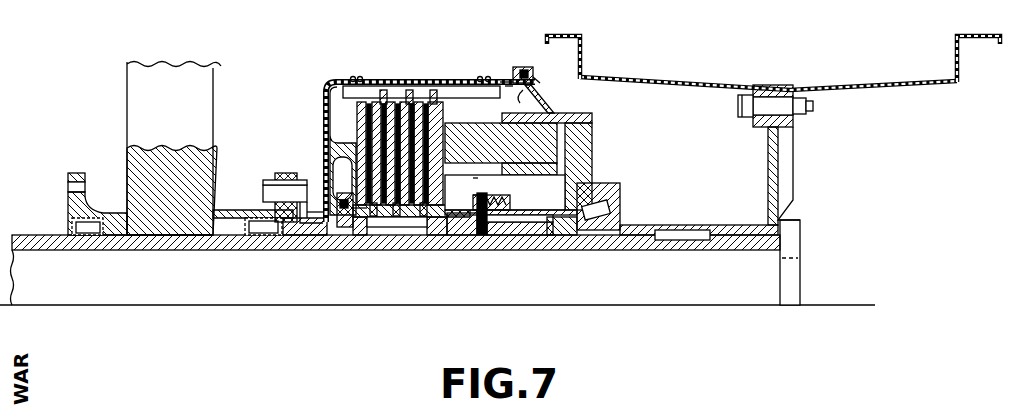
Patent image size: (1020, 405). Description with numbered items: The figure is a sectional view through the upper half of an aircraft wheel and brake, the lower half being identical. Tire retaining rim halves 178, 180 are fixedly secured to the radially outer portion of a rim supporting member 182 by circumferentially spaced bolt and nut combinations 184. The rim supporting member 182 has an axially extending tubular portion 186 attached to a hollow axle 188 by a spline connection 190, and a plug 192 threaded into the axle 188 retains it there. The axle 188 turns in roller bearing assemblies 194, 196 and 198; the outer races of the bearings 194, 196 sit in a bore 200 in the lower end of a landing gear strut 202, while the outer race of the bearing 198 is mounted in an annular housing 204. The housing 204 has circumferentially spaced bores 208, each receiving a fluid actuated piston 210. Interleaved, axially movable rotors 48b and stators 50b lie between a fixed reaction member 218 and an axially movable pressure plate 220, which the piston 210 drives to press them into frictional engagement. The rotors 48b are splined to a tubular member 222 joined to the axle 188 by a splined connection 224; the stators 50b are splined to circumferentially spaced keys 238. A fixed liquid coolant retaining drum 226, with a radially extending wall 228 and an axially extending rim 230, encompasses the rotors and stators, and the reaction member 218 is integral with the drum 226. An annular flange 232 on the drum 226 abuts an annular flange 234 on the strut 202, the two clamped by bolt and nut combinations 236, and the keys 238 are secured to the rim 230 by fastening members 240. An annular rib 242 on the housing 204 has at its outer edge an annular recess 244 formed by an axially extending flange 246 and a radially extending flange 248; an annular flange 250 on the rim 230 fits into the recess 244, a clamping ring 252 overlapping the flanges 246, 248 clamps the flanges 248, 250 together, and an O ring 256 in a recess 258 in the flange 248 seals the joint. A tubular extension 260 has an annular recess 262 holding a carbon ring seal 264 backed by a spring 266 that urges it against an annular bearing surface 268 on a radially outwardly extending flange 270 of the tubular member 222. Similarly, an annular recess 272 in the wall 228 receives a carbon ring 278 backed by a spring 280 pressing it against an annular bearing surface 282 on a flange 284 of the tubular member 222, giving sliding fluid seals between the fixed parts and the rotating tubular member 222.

The tire retaining rim half 178 is at (585, 33).
The tire retaining rim half 180 is at (963, 38).
The rim supporting member 182 is at (783, 163).
The bolt and nut combinations 184 is at (813, 108).
The axially extending tubular portion 186 is at (723, 227).
The hollow axle 188 is at (705, 293).
The spline connection 190 is at (705, 243).
The plug 192 is at (788, 280).
The roller bearing assembly 194 is at (88, 240).
The roller bearing assembly 196 is at (262, 230).
The roller bearing assembly 198 is at (620, 210).
The bore 200 is at (122, 205).
The landing gear strut 202 is at (140, 108).
The annular housing 204 is at (583, 142).
The bores 208 is at (590, 173).
The fluid actuated piston 210 is at (592, 122).
The fixed reaction member 218 is at (333, 128).
The axially movable pressure plate 220 is at (447, 100).
The tubular member 222 is at (530, 233).
The splined connection 224 is at (455, 230).
The liquid coolant retaining drum 226 is at (324, 80).
The radially extending wall 228 is at (322, 93).
The axially extending rim 230 is at (383, 93).
The annular flange 232 is at (293, 173).
The annular flange 234 is at (273, 177).
The bolt and nut combinations 236 is at (263, 190).
The keys 238 is at (417, 88).
The fastening members 240 is at (357, 78).
The annular rib 242 is at (540, 105).
The annular recess 244 is at (548, 60).
The axially extending flange 246 is at (510, 92).
The radially extending flange 248 is at (547, 73).
The annular flange 250 is at (515, 66).
The clamping ring 252 is at (523, 67).
The O ring 256 is at (515, 77).
The recess 258 is at (513, 70).
The tubular extension 260 is at (553, 220).
The annular recess 262 is at (510, 203).
The carbon ring seal 264 is at (482, 235).
The spring 266 is at (497, 215).
The annular bearing surface 268 is at (480, 202).
The radially outwardly extending flange 270 is at (478, 193).
The annular recess 272 is at (333, 210).
The carbon ring 278 is at (343, 208).
The spring 280 is at (320, 208).
The annular bearing surface 282 is at (357, 208).
The radially outwardly extending flange 284 is at (345, 200).
The rotors 48b is at (400, 97).
The stators 50b is at (398, 103).